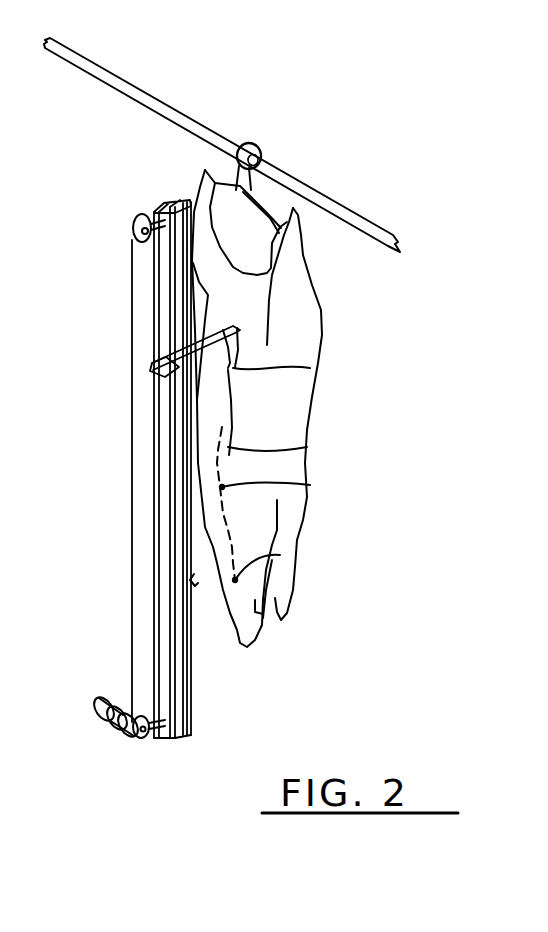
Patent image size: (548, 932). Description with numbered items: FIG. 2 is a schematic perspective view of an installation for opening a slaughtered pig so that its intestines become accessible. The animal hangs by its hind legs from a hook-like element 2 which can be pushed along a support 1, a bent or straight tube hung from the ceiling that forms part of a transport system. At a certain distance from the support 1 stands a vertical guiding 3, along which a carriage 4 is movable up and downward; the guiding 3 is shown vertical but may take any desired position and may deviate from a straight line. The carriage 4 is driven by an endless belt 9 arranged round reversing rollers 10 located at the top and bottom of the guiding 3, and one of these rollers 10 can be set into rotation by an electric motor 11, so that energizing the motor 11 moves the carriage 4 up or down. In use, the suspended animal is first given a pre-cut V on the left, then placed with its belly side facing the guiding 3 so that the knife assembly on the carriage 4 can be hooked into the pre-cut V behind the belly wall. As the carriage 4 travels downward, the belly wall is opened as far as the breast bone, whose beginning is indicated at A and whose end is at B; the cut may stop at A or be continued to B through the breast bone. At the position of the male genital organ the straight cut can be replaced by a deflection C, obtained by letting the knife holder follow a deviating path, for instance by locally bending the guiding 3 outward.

The support 1 is at (157, 103).
The hook-like element 2 is at (243, 148).
The vertical guiding 3 is at (163, 483).
The carriage 4 is at (163, 370).
The endless belt 9 is at (130, 565).
The reversing rollers 10 is at (143, 228).
The electric motor 11 is at (103, 700).
The pre-cut V is at (310, 368).
The deflection C is at (307, 447).
The beginning of the breast bone A is at (310, 485).
The end of the breast bone B is at (280, 555).